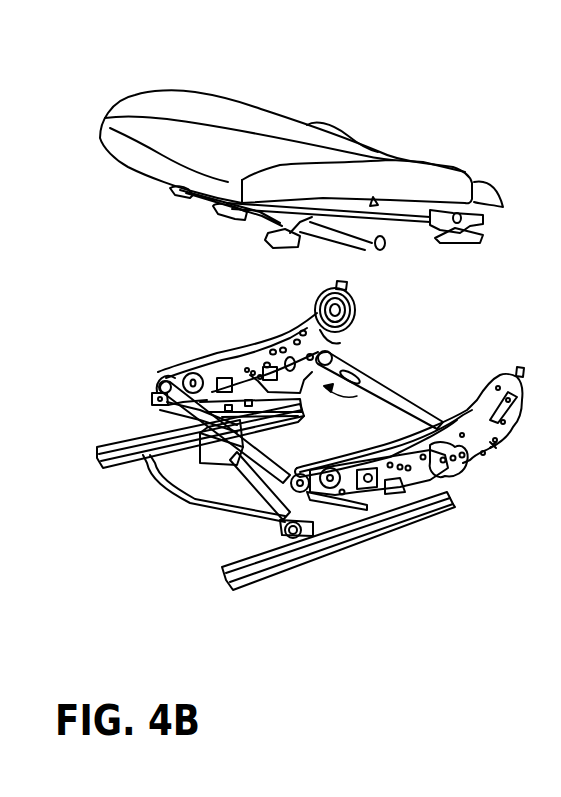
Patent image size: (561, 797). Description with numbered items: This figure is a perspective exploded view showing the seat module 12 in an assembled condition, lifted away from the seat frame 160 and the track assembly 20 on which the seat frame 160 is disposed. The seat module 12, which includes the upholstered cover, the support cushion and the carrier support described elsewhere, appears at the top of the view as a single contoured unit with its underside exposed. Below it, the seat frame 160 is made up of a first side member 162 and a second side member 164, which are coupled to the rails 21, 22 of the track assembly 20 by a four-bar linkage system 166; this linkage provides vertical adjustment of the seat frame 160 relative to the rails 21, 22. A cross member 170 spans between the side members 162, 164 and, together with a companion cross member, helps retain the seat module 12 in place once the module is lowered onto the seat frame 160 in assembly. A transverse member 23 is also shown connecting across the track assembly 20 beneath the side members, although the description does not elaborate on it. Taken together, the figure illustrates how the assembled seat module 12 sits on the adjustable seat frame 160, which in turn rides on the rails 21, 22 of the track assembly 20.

The seat module 12 is at (377, 125).
The track assembly 20 is at (121, 419).
The rail 21 is at (107, 442).
The rail 22 is at (290, 568).
The cross member 23 is at (162, 485).
The seat frame 160 is at (466, 379).
The first side member 162 is at (257, 347).
The second side member 164 is at (493, 450).
The four-bar linkage system 166 is at (370, 387).
The second cross member 170 is at (403, 400).